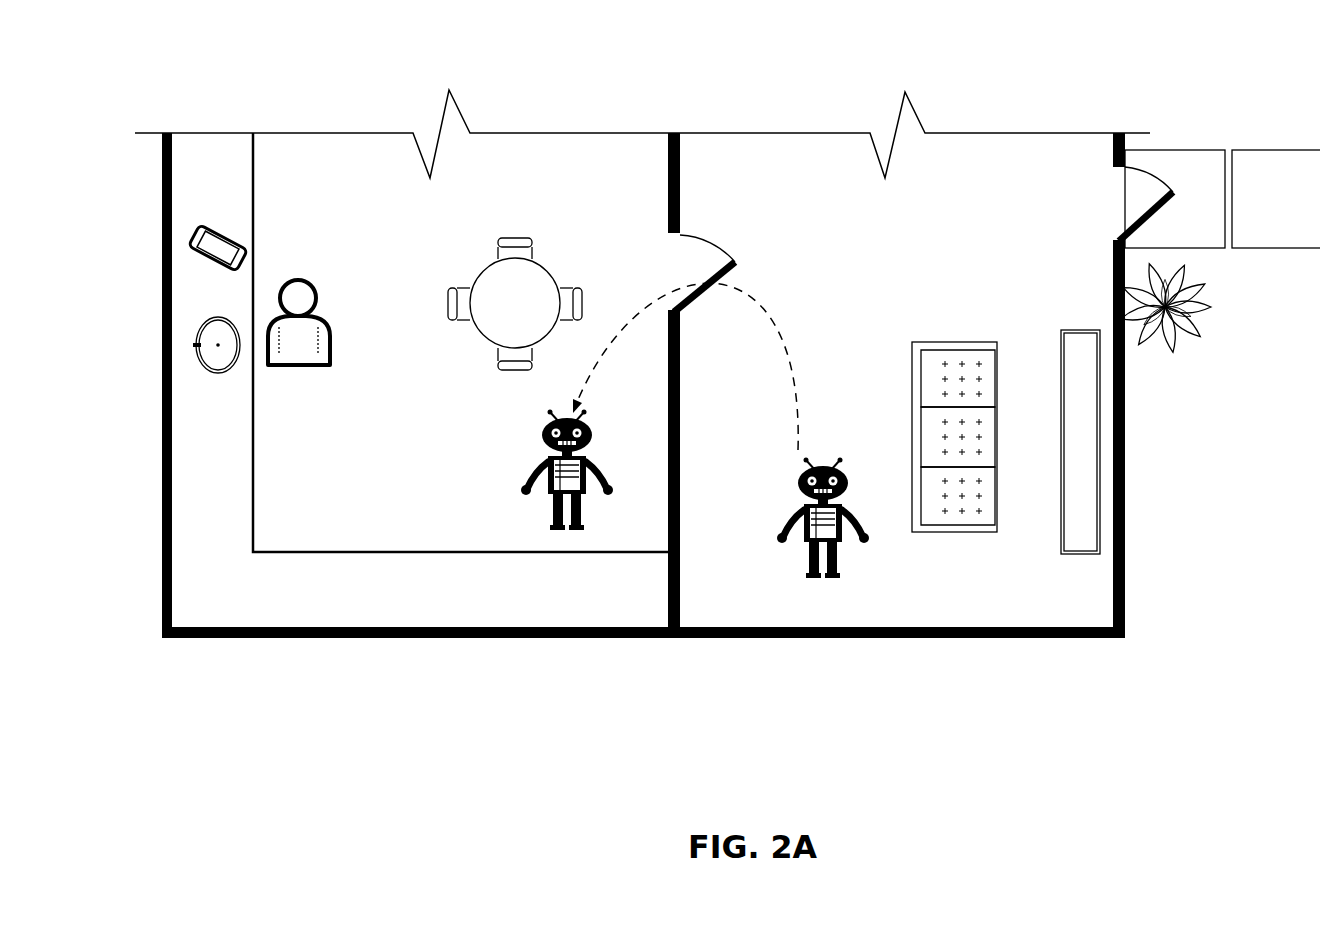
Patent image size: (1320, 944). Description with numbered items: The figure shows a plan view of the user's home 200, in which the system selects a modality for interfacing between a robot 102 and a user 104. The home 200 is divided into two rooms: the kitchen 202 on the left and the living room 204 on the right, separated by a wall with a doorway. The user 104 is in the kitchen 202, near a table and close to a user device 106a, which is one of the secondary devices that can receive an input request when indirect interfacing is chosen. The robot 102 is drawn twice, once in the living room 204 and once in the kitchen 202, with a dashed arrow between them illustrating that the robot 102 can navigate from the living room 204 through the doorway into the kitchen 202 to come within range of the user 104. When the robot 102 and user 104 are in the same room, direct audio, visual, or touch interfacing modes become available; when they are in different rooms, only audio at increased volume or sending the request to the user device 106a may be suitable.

The user's home 200 is at (193, 90).
The kitchen 202 is at (552, 215).
The living room 204 is at (935, 253).
The robot 102 is at (528, 470).
The user 104 is at (320, 292).
The user device 106a is at (212, 230).